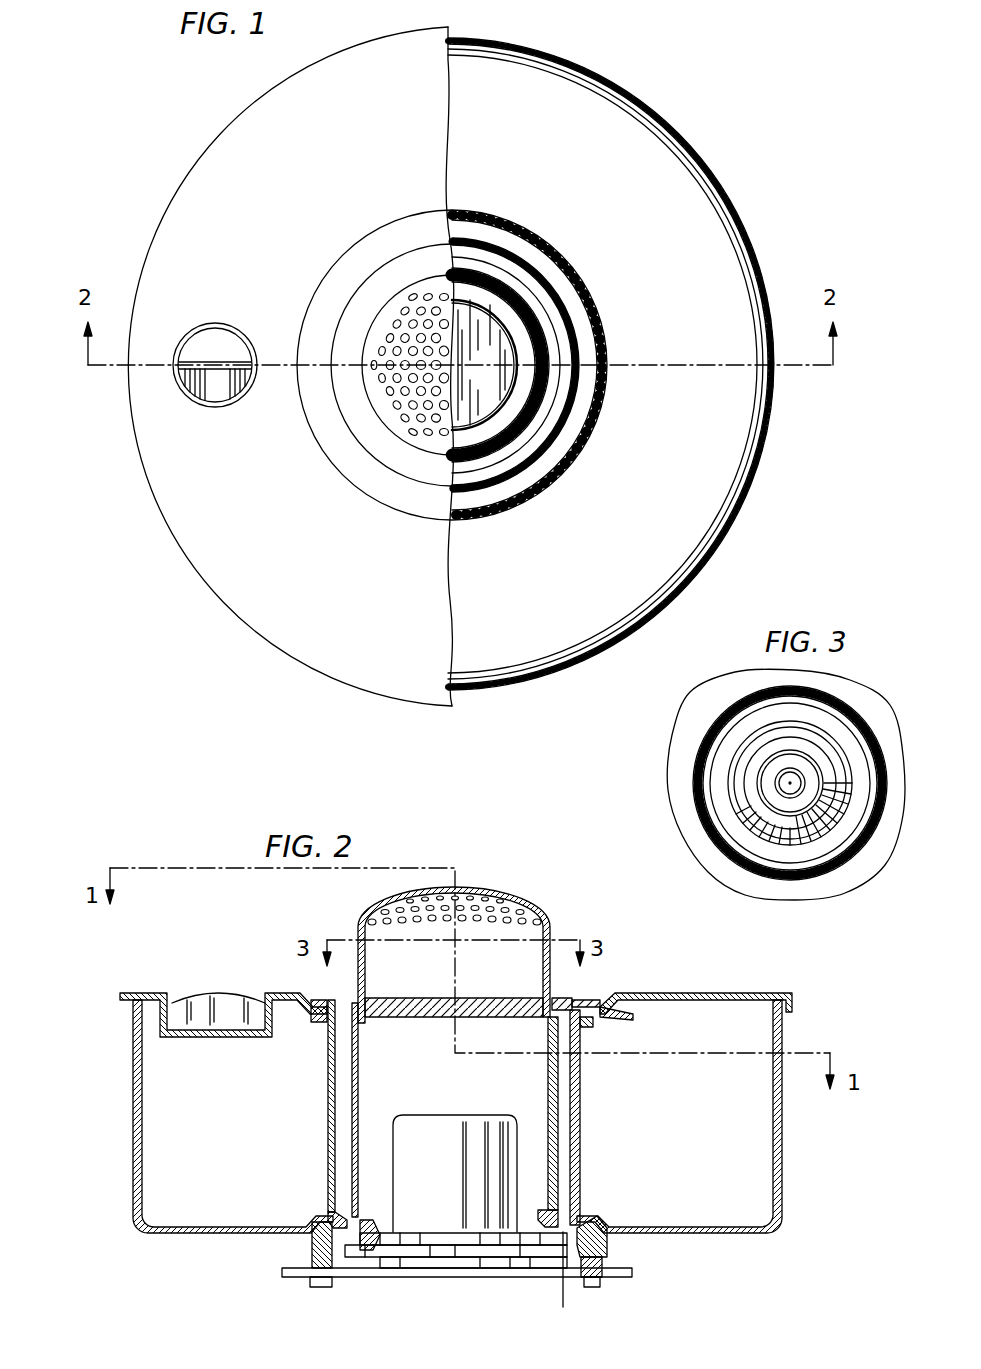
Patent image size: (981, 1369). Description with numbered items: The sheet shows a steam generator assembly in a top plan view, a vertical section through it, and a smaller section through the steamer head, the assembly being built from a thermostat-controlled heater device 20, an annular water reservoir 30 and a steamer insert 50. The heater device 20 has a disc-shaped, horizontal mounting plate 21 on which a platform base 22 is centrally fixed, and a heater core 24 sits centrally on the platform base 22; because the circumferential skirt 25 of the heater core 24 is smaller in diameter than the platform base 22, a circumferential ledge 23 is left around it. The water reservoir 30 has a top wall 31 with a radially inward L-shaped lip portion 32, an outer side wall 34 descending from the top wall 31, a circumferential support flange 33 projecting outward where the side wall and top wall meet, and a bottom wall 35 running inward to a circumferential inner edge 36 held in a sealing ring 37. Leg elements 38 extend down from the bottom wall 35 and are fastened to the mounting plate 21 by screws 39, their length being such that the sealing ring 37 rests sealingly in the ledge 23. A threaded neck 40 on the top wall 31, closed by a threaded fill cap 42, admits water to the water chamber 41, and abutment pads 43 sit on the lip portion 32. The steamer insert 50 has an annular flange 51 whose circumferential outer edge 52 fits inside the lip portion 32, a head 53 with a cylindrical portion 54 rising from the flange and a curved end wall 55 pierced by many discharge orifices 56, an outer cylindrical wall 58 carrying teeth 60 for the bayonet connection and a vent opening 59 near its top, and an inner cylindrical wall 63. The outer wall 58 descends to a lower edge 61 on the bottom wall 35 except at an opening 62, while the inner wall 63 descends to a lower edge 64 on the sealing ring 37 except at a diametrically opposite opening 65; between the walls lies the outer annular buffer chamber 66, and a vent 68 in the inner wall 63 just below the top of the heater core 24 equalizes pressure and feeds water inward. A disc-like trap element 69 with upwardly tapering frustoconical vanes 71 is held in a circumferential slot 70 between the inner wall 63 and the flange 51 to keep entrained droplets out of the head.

In FIG. 2, the thermostat-controlled heater device 20 is at (470, 1282).
In FIG. 2, the mounting plate 21 is at (610, 1281).
In FIG. 2, the platform base 22 is at (438, 1272).
In FIG. 2, the circumferential ledge 23 is at (380, 1270).
In FIG. 1, the heater core 24 is at (470, 318).
In FIG. 2, the heater core 24 is at (444, 1155).
In FIG. 2, the circumferential skirt 25 is at (412, 1240).
In FIG. 1, the annular water reservoir 30 is at (666, 117).
In FIG. 2, the annular water reservoir 30 is at (488, 1131).
In FIG. 1, the top wall 31 is at (314, 557).
In FIG. 2, the top wall 31 is at (673, 997).
In FIG. 2, the L-shaped lip portion 32 is at (606, 1013).
In FIG. 2, the circumferential support flange 33 is at (790, 994).
In FIG. 1, the outer side wall 34 is at (745, 213).
In FIG. 2, the outer side wall 34 is at (783, 1195).
In FIG. 2, the bottom wall 35 is at (713, 1236).
In FIG. 2, the circumferential inner edge 36 is at (566, 1284).
In FIG. 2, the sealing ring 37 is at (545, 1216).
In FIG. 2, the leg elements 38 is at (310, 1262).
In FIG. 2, the screws 39 is at (314, 1288).
In FIG. 2, the threaded neck 40 is at (275, 1032).
In FIG. 2, the water chamber 41 is at (202, 1094).
In FIG. 1, the threaded fill cap 42 is at (210, 330).
In FIG. 2, the threaded fill cap 42 is at (188, 1005).
In FIG. 2, the abutment pads 43 is at (322, 1010).
In FIG. 2, the steamer insert 50 is at (455, 933).
In FIG. 1, the annular flange 51 is at (342, 278).
In FIG. 2, the annular flange 51 is at (428, 980).
In FIG. 2, the circumferential outer edge 52 is at (600, 1004).
In FIG. 2, the head 53 is at (392, 908).
In FIG. 1, the cylindrical portion 54 is at (500, 365).
In FIG. 3, the cylindrical portion 54 is at (852, 712).
In FIG. 2, the cylindrical portion 54 is at (360, 985).
In FIG. 2, the curved end wall 55 is at (470, 888).
In FIG. 1, the discharge orifices 56 is at (408, 288).
In FIG. 1, the outer cylindrical wall 58 is at (560, 428).
In FIG. 2, the outer cylindrical wall 58 is at (581, 1103).
In FIG. 2, the vent opening 59 is at (582, 1045).
In FIG. 2, the teeth 60 is at (588, 1024).
In FIG. 2, the lower edge 61 is at (580, 1229).
In FIG. 2, the opening 62 is at (338, 1212).
In FIG. 1, the inner cylindrical wall 63 is at (527, 297).
In FIG. 2, the inner cylindrical wall 63 is at (358, 1052).
In FIG. 2, the lower edge 64 is at (365, 1230).
In FIG. 2, the opening 65 is at (556, 1214).
In FIG. 2, the outer annular buffer chamber 66 is at (345, 1092).
In FIG. 2, the vent 68 is at (352, 1140).
In FIG. 2, the trap element 69 is at (541, 1022).
In FIG. 3, the circumferential slot 70 is at (730, 762).
In FIG. 2, the circumferential slot 70 is at (526, 1010).
In FIG. 2, the frustoconical vanes 71 is at (497, 1003).